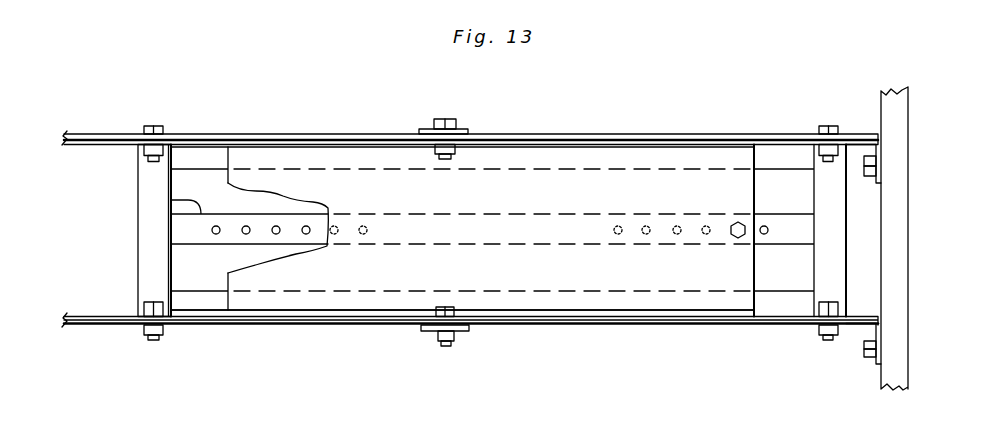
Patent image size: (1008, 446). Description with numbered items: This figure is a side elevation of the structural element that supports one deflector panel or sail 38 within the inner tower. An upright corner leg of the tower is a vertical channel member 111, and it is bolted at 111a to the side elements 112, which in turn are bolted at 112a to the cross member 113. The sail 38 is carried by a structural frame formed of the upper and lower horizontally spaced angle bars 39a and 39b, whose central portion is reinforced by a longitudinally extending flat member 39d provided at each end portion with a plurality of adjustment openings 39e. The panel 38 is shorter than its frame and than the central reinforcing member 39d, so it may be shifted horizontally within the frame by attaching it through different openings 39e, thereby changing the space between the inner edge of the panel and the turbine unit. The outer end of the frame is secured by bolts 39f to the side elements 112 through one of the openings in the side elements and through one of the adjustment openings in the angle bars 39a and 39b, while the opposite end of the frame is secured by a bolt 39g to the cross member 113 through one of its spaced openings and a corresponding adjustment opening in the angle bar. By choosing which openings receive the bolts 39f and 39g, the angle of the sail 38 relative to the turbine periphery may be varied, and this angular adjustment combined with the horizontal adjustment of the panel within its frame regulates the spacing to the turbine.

The deflector panel or sail 38 is at (527, 183).
The upper angle bar 39a is at (767, 133).
The lower angle bar 39b is at (563, 312).
The flat reinforcing member 39d is at (197, 208).
The adjustment openings 39e is at (210, 229).
The bolts 39f is at (831, 125).
The bolt 39g is at (153, 125).
The vertical channel member 111 is at (895, 90).
The bolted connection 111a is at (862, 348).
The side element 112 is at (626, 133).
The bolted connection 112a is at (438, 118).
The cross member 113 is at (418, 130).